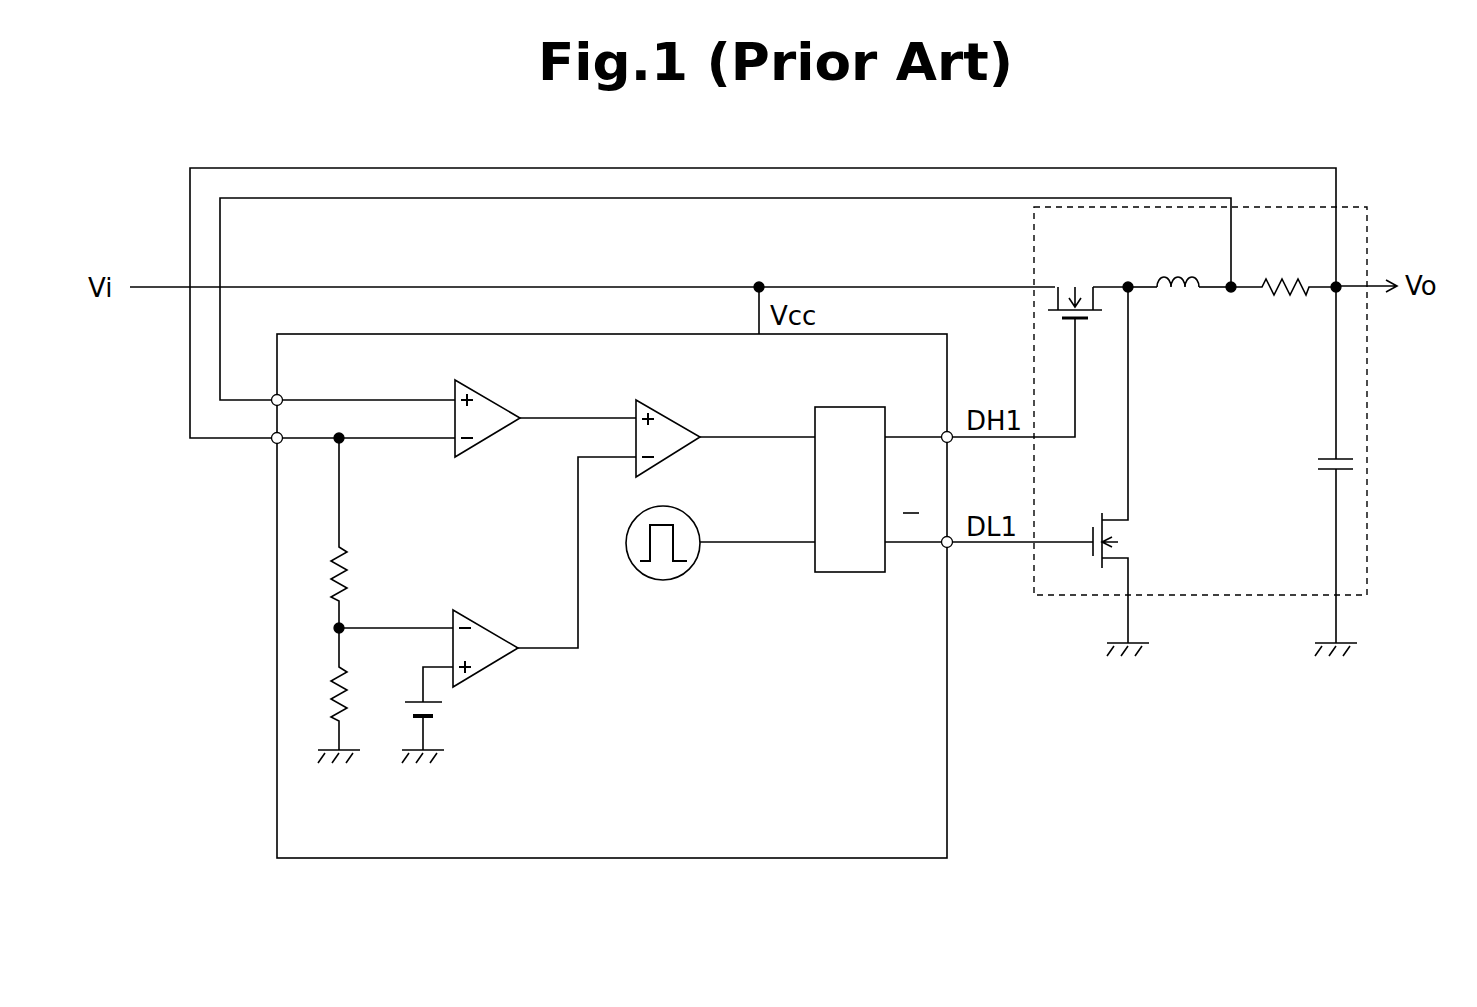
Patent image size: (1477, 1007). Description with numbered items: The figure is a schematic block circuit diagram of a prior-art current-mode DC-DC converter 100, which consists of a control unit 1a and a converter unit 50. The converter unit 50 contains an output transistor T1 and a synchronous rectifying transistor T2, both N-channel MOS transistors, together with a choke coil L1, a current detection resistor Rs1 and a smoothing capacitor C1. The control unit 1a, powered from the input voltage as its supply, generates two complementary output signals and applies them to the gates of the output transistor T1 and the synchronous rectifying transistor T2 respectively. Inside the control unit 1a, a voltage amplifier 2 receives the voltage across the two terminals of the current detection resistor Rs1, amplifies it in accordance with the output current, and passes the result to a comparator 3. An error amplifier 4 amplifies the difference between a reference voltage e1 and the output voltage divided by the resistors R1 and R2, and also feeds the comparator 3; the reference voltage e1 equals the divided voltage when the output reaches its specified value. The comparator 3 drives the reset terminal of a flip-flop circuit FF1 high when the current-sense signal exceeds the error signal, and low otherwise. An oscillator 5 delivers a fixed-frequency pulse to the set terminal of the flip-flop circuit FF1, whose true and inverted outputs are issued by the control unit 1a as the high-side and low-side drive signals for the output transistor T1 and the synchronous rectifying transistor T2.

The current-mode DC-DC converter 100 is at (1363, 134).
The converter unit 50 is at (1368, 218).
The control unit 1a is at (947, 738).
The voltage amplifier 2 is at (493, 404).
The comparator 3 is at (672, 423).
The error amplifier 4 is at (485, 632).
The oscillator 5 is at (688, 565).
The flip-flop circuit FF1 is at (861, 489).
The resistor R1 is at (350, 578).
The resistor R2 is at (350, 682).
The reference voltage e1 is at (441, 715).
The output transistor T1 is at (1057, 288).
The synchronous rectifying transistor T2 is at (1118, 556).
The choke coil L1 is at (1160, 271).
The current detection resistor Rs1 is at (1264, 274).
The smoothing capacitor C1 is at (1326, 454).